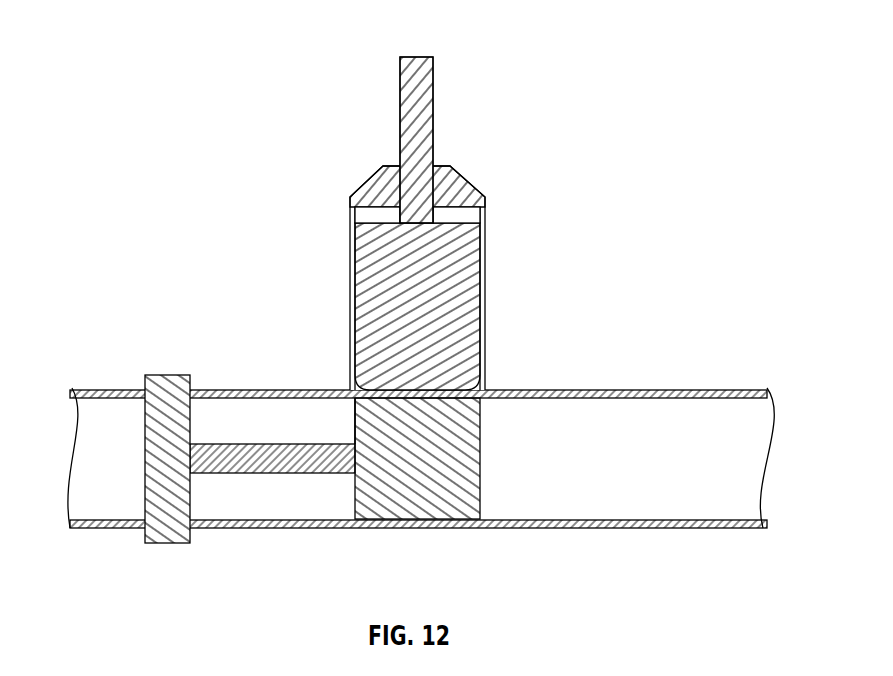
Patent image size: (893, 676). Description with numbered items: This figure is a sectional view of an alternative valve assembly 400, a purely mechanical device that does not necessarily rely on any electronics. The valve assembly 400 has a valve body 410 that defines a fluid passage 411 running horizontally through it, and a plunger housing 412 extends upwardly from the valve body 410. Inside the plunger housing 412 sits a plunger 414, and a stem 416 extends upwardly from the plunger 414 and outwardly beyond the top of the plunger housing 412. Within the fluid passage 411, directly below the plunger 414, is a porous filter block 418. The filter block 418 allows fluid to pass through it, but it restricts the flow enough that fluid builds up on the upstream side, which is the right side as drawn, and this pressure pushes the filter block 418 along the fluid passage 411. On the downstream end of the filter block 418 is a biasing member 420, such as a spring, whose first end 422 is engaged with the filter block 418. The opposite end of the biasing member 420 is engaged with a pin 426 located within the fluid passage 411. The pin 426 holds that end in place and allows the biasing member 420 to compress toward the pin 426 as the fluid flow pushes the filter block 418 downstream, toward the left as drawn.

The valve assembly 400 is at (421, 284).
The valve body 410 is at (265, 391).
The fluid passage 411 is at (643, 508).
The plunger housing 412 is at (485, 258).
The plunger 414 is at (352, 245).
The stem 416 is at (435, 93).
The porous filter block 418 is at (365, 497).
The biasing member 420 is at (215, 474).
The first end 422 is at (354, 421).
The pin 426 is at (143, 532).